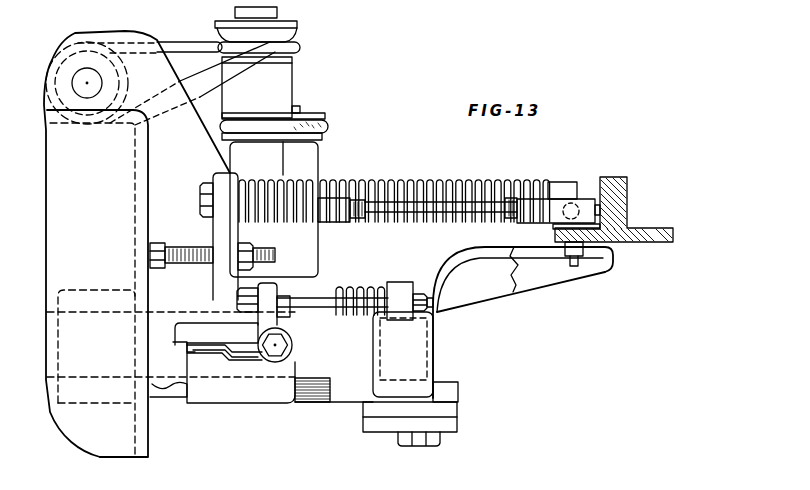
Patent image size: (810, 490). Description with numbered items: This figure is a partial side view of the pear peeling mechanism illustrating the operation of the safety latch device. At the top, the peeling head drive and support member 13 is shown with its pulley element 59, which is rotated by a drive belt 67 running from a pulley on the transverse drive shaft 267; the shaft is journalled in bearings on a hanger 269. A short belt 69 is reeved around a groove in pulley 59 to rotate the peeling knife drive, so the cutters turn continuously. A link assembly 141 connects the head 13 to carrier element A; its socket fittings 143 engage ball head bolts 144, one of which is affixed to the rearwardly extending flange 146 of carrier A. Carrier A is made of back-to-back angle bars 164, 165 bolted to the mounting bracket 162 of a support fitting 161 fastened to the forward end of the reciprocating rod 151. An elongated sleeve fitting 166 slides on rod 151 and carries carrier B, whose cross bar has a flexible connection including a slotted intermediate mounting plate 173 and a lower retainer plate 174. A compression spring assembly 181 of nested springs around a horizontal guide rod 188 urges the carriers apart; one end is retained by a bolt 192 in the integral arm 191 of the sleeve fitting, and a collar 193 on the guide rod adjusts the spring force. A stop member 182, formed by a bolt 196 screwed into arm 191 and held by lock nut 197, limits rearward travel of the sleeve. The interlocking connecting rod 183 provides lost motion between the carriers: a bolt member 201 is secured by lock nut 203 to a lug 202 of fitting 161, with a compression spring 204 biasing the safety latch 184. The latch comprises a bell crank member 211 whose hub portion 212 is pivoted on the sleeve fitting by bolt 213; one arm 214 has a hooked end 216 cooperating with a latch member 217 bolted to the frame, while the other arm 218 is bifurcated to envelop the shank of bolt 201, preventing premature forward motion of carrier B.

The peeling head drive and support member 13 is at (292, 142).
The pulley element 59 is at (292, 70).
The drive belt 67 is at (194, 44).
The short belt 69 is at (330, 127).
The link assembly 141 is at (446, 222).
The socket fitting 143 is at (335, 220).
The ball head bolt 144 is at (580, 262).
The rearwardly extending flange 146 is at (556, 236).
The reciprocating rod 151 is at (326, 378).
The support fitting 161 is at (495, 300).
The mounting bracket 162 is at (547, 280).
The angle bar 164 is at (600, 178).
The angle bar 165 is at (614, 195).
The sleeve fitting 166 is at (275, 405).
The slotted intermediate mounting plate 173 is at (452, 417).
The lower retainer plate 174 is at (398, 437).
The compression spring assembly 181 is at (440, 180).
The stop member 182 is at (181, 252).
The interlocking connecting rod 183 is at (318, 296).
The safety latch 184 is at (228, 367).
The horizontal guide rod 188 is at (590, 198).
The integral arm 191 is at (222, 178).
The bolt 192 is at (200, 198).
The collar 193 is at (560, 182).
The bolt 196 is at (196, 262).
The lock nut 197 is at (258, 247).
The bolt member 201 is at (320, 308).
The lug 202 is at (398, 322).
The lock nut 203 is at (430, 290).
The compression spring 204 is at (395, 282).
The bell crank member 211 is at (252, 342).
The hub portion 212 is at (286, 362).
The bolt 213 is at (240, 356).
The arm 214 is at (196, 309).
The hooked end 216 is at (172, 345).
The latch member 217 is at (180, 395).
The arm 218 is at (268, 290).
The transverse drive shaft 267 is at (92, 98).
The hanger 269 is at (103, 33).